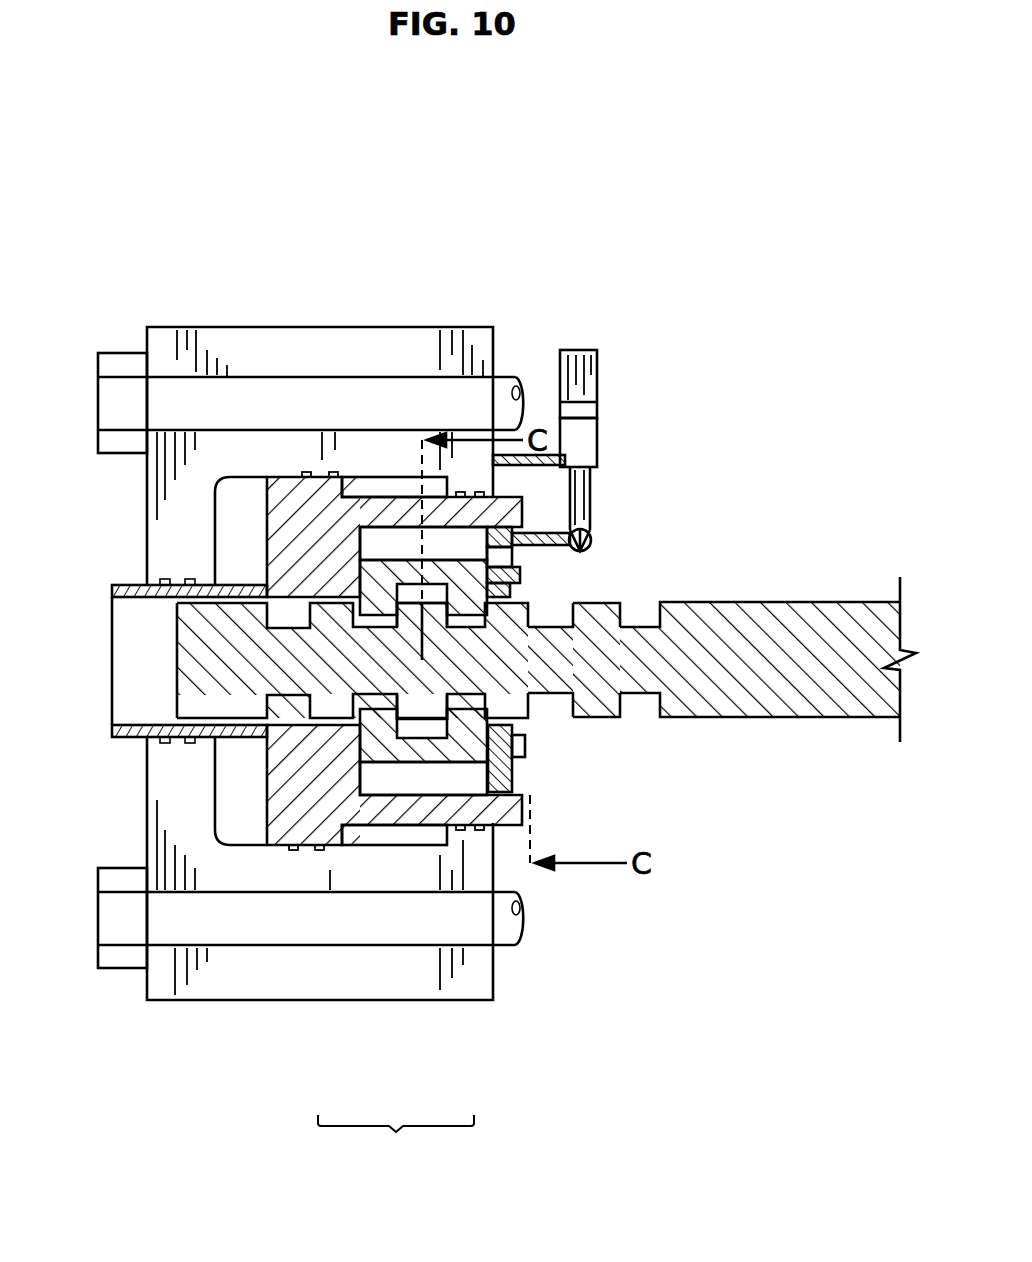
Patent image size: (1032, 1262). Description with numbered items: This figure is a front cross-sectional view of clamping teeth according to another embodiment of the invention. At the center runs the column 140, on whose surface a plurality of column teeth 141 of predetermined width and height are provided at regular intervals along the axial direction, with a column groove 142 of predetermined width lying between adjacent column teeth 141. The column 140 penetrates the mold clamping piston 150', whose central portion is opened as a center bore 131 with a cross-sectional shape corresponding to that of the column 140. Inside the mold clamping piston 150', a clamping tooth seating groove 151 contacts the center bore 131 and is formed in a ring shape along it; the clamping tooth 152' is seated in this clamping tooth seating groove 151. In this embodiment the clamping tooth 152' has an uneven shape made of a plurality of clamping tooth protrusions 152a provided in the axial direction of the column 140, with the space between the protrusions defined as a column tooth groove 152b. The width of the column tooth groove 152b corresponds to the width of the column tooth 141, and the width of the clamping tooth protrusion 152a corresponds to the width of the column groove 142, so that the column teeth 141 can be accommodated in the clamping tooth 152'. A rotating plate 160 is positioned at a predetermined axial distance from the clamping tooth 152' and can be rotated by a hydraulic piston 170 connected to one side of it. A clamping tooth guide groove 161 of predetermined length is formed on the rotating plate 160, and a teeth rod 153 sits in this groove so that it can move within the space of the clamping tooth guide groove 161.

The center bore 131 is at (150, 666).
The column 140 is at (822, 603).
The column teeth 141 is at (600, 600).
The column groove 142 is at (555, 608).
The mold clamping piston 150' is at (394, 548).
The clamping tooth seating groove 151 is at (406, 542).
The clamping tooth 152' is at (396, 1143).
The clamping tooth protrusions 152a is at (470, 740).
The column tooth groove 152b is at (420, 728).
The teeth rod 153 is at (523, 555).
The rotating plate 160 is at (513, 763).
The clamping tooth guide groove 161 is at (597, 425).
The hydraulic piston 170 is at (587, 348).